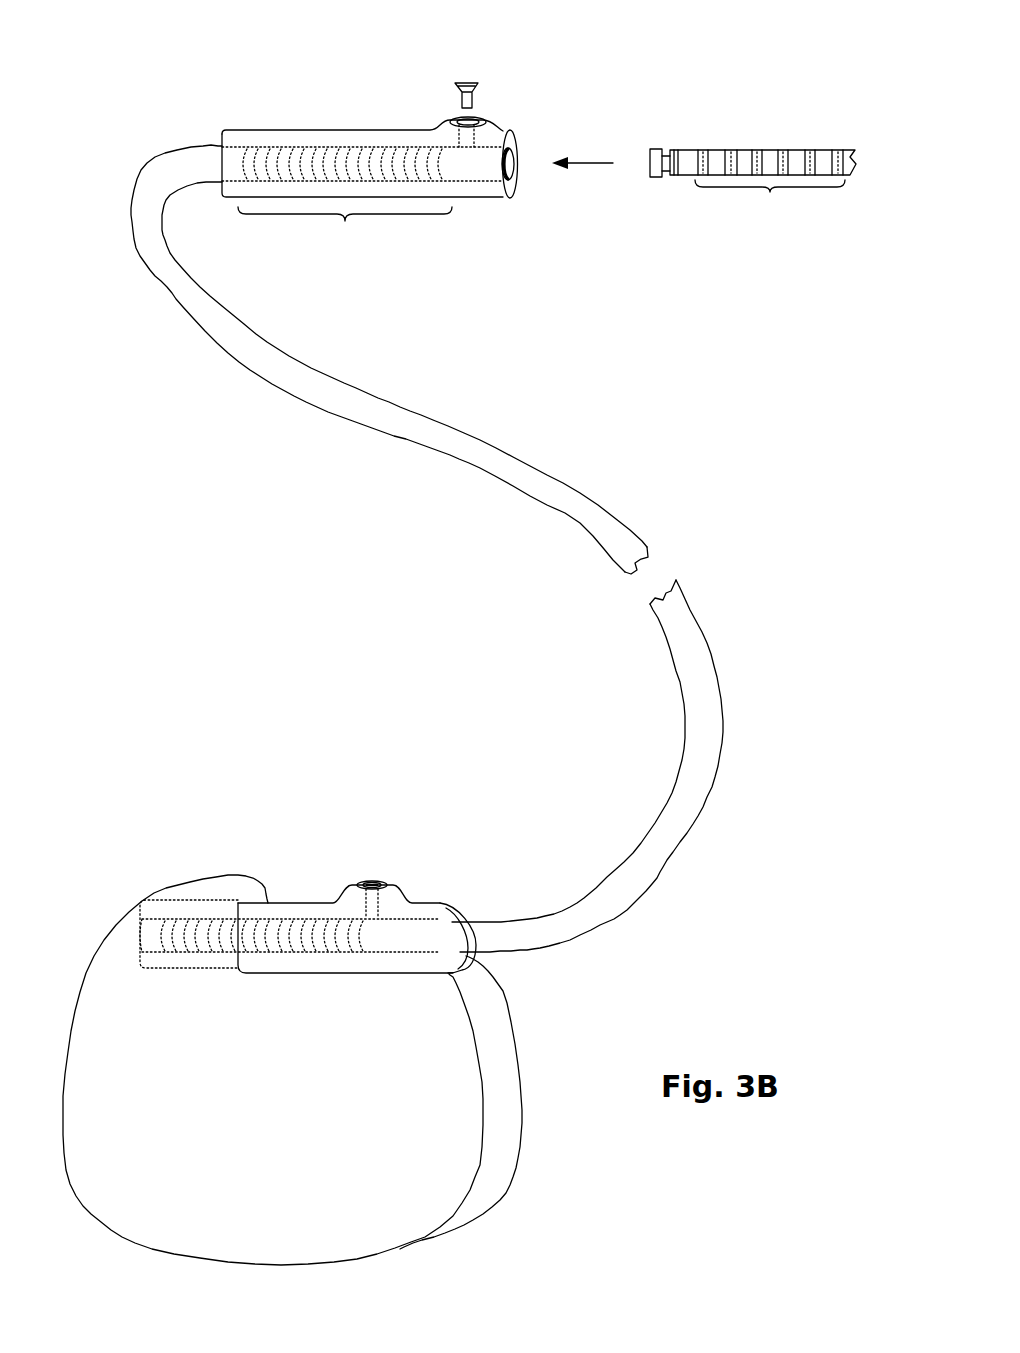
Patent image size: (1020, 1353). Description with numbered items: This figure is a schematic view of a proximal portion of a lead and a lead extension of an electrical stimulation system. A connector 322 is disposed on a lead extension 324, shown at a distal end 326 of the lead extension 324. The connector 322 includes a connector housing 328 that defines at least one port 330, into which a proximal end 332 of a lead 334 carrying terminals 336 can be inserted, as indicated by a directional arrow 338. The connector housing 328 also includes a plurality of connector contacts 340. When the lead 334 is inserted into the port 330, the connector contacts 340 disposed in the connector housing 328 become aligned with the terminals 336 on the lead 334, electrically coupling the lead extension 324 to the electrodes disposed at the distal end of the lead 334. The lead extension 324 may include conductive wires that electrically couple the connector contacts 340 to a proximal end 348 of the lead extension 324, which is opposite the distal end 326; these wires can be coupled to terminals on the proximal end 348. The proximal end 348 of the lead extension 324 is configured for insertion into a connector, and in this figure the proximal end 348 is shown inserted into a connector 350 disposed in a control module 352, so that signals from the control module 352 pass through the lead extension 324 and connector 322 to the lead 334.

The connector 322 is at (327, 130).
The lead extension 324 is at (450, 427).
The distal end 326 is at (216, 124).
The connector housing 328 is at (270, 142).
The port 330 is at (530, 186).
The proximal end 332 is at (731, 120).
The lead 334 is at (767, 149).
The terminals 336 is at (770, 203).
The directional arrow 338 is at (590, 162).
The connector contacts 340 is at (345, 232).
The proximal end 348 is at (492, 895).
The connector 350 is at (300, 902).
The control module 352 is at (113, 879).